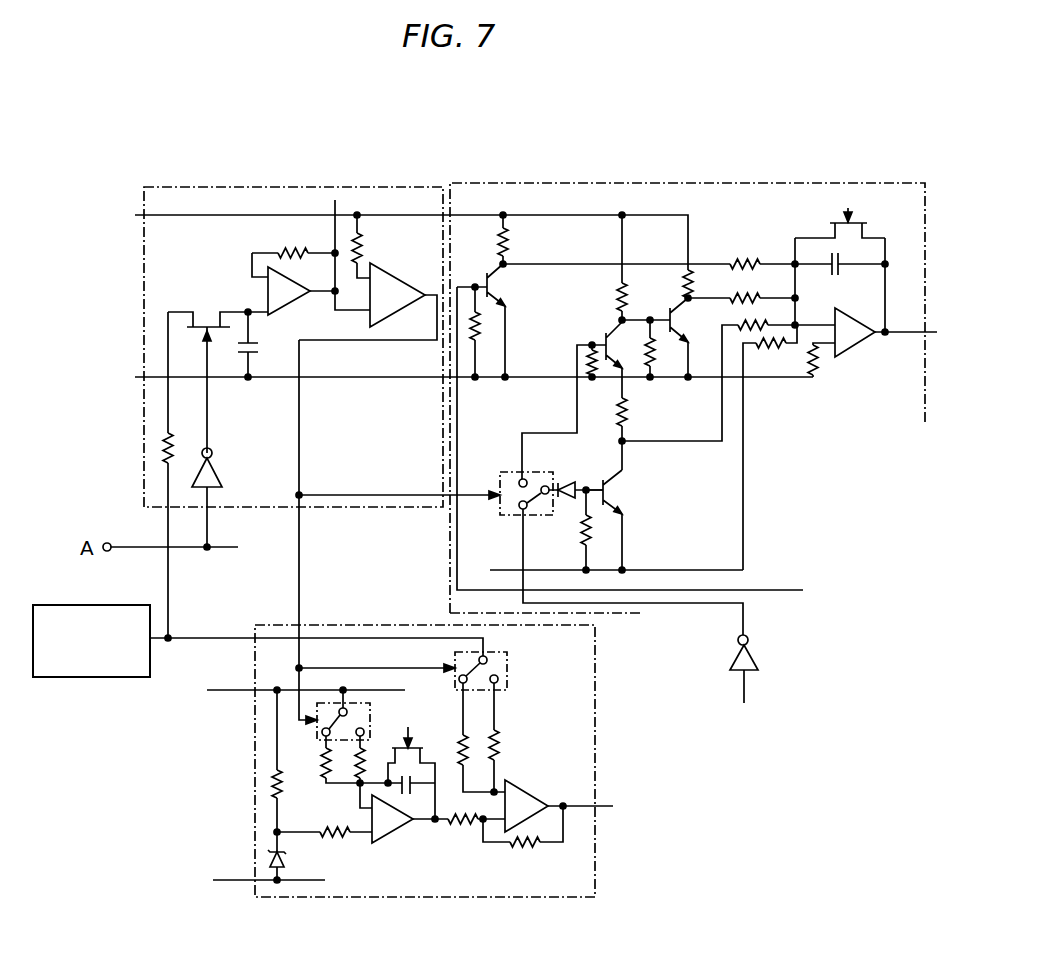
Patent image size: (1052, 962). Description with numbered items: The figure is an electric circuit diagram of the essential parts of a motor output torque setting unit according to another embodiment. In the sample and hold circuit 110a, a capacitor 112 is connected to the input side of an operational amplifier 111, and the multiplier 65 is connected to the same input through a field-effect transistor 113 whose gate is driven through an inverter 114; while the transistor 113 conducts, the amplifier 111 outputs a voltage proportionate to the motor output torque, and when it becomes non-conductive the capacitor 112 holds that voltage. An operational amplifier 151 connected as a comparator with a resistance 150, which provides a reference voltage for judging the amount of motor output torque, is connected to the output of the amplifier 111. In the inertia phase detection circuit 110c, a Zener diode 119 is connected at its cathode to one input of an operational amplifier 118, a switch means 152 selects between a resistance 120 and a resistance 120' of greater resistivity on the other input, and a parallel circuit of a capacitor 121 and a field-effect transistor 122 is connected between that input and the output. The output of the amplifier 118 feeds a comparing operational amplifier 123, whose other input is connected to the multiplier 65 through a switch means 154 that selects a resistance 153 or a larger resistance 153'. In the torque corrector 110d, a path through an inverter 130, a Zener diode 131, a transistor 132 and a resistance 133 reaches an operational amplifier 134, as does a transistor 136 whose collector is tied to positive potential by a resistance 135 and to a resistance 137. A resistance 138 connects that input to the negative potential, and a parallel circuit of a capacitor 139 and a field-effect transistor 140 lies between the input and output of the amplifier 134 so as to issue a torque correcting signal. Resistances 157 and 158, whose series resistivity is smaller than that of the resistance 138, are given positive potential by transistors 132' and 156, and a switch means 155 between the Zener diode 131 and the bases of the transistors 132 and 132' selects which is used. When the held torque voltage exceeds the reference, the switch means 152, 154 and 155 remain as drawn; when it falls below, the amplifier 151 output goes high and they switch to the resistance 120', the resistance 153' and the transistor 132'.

The sample and hold circuit 110a is at (275, 187).
The inertia phase detection circuit 110c is at (380, 898).
The torque corrector circuit 110d is at (612, 183).
The multiplier 65 is at (99, 605).
The operational amplifier 111 is at (278, 302).
The capacitor 112 is at (258, 352).
The field-effect transistor 113 is at (203, 312).
The inverter 114 is at (222, 473).
The operational amplifier 118 is at (388, 836).
The Zener diode 119 is at (285, 858).
The resistance 120 is at (306, 758).
The resistance 120' is at (337, 786).
The capacitor 121 is at (414, 793).
The field-effect transistor 122 is at (423, 753).
The comparing operational amplifier 123 is at (527, 800).
The inverter 130 is at (748, 658).
The Zener diode 131 is at (568, 506).
The transistor 132 is at (633, 486).
The transistor 132' is at (591, 335).
The resistance 133 is at (742, 320).
The operational amplifier 134 is at (858, 343).
The resistance 135 is at (510, 242).
The transistor 136 is at (492, 291).
The resistance 137 is at (735, 260).
The resistance 138 is at (770, 350).
The capacitor 139 is at (840, 268).
The field-effect transistor 140 is at (855, 222).
The resistance 150 is at (362, 243).
The operational amplifier 151 is at (388, 282).
The switch means 152 is at (372, 711).
The resistance 153 is at (501, 732).
The resistance 153' is at (526, 745).
The switch means 154 is at (507, 661).
The switch means 155 is at (538, 472).
The transistor 156 is at (679, 332).
The resistance 157 is at (765, 294).
The resistance 158 is at (627, 302).